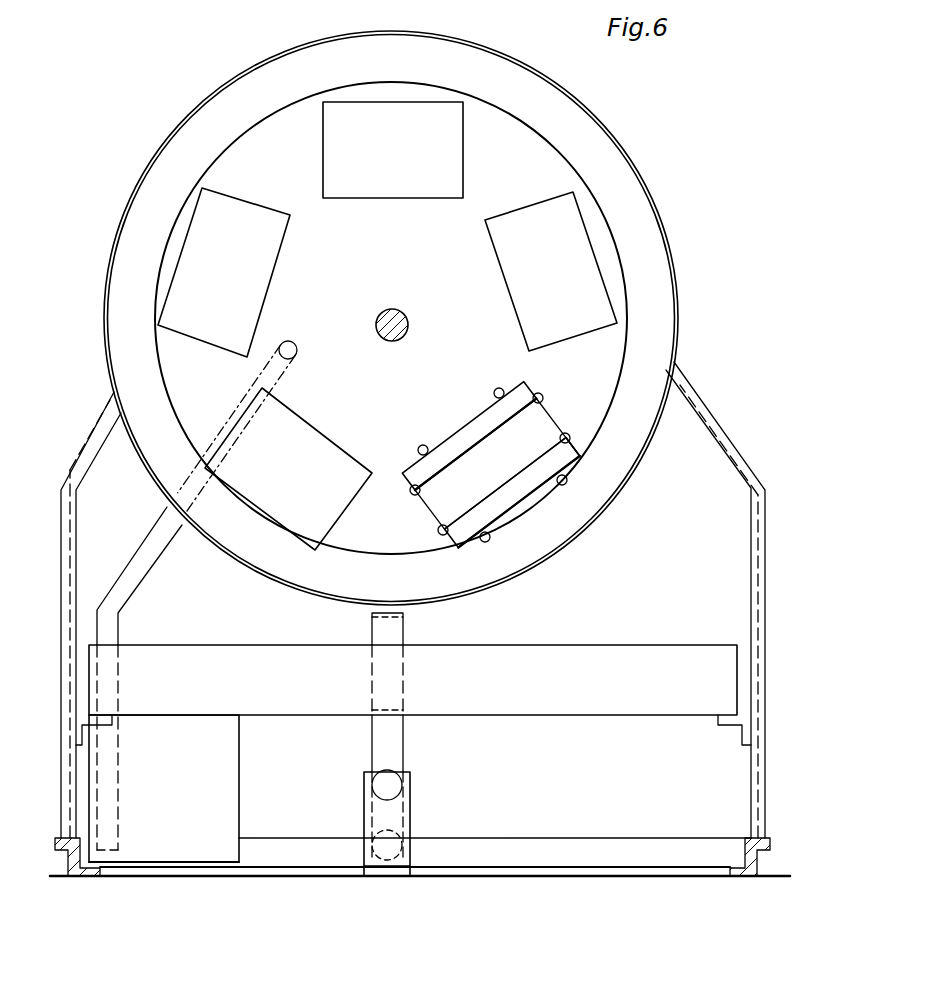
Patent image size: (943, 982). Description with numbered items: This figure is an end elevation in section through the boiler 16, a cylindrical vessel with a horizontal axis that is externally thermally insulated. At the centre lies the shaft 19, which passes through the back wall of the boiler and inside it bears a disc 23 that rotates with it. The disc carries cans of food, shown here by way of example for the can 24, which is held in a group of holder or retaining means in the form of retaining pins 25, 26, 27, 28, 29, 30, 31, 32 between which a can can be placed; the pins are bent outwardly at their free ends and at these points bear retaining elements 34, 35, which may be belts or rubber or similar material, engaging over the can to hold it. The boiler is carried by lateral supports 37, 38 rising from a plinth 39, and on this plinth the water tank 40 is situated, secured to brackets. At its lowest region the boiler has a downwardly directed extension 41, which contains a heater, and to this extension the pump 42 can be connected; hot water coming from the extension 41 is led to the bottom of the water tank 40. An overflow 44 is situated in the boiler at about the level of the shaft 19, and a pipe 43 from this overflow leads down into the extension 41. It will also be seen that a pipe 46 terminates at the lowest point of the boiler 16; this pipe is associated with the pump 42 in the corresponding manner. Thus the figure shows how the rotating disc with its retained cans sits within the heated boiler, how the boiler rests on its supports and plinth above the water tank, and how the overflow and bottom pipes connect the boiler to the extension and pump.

The boiler 16 is at (509, 54).
The shaft 19 is at (402, 312).
The disc 23 is at (247, 152).
The can 24 is at (508, 513).
The retaining pin 25 is at (486, 542).
The retaining pin 26 is at (562, 485).
The retaining pin 27 is at (423, 445).
The retaining pin 28 is at (497, 388).
The retaining pin 29 is at (410, 491).
The retaining pin 30 is at (438, 532).
The retaining pin 31 is at (541, 394).
The retaining pin 32 is at (575, 432).
The retaining element 34 is at (523, 418).
The retaining element 35 is at (567, 452).
The lateral support 37 is at (93, 430).
The lateral support 38 is at (732, 430).
The plinth 39 is at (633, 860).
The water tank 40 is at (708, 657).
The extension 41 is at (165, 855).
The pump 42 is at (362, 817).
The pipe 43 is at (140, 585).
The overflow 44 is at (294, 342).
The pipe 46 is at (398, 675).